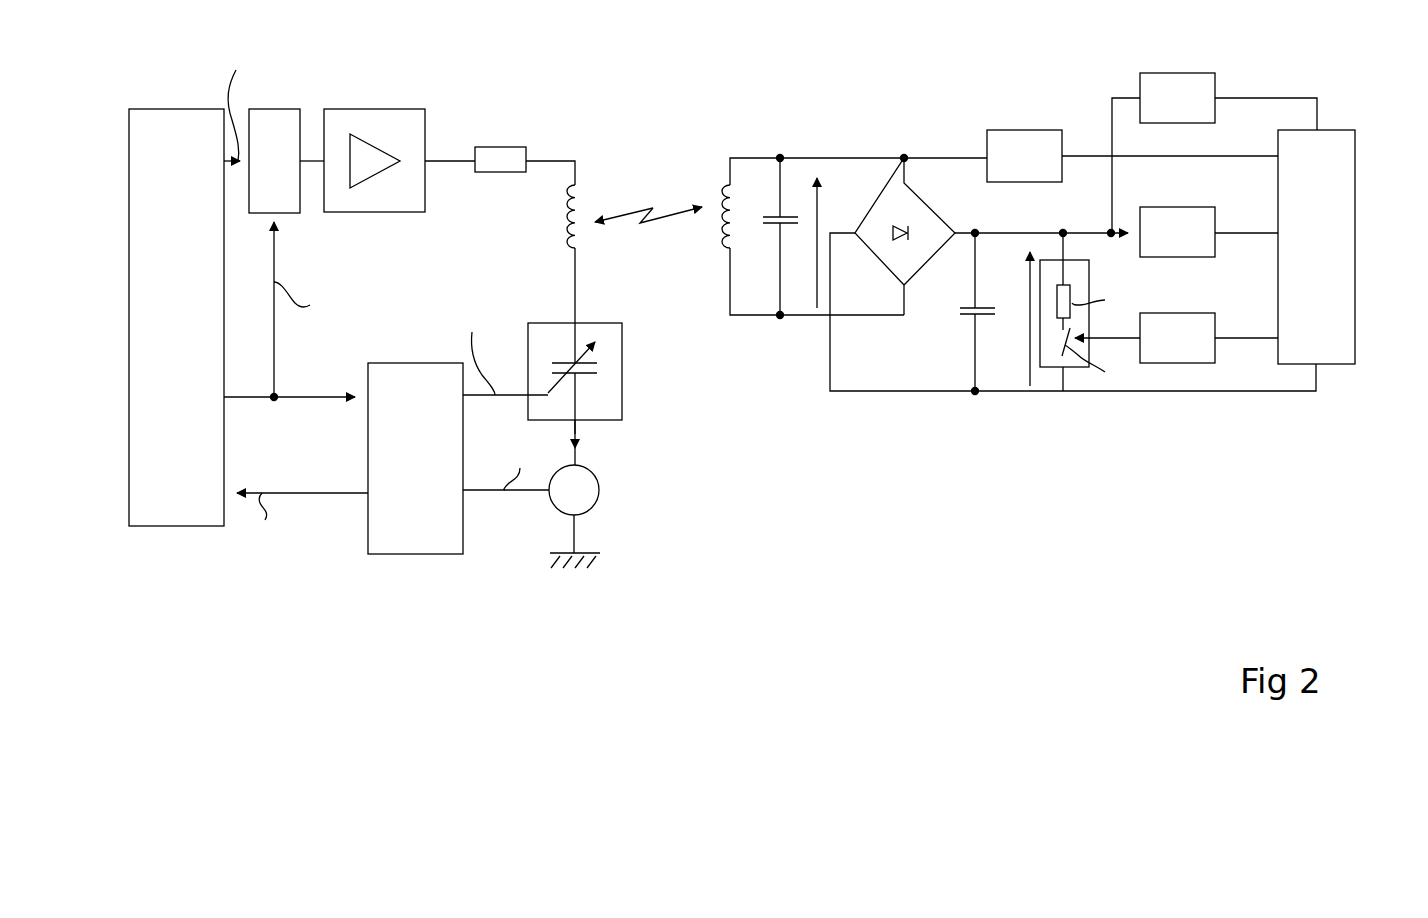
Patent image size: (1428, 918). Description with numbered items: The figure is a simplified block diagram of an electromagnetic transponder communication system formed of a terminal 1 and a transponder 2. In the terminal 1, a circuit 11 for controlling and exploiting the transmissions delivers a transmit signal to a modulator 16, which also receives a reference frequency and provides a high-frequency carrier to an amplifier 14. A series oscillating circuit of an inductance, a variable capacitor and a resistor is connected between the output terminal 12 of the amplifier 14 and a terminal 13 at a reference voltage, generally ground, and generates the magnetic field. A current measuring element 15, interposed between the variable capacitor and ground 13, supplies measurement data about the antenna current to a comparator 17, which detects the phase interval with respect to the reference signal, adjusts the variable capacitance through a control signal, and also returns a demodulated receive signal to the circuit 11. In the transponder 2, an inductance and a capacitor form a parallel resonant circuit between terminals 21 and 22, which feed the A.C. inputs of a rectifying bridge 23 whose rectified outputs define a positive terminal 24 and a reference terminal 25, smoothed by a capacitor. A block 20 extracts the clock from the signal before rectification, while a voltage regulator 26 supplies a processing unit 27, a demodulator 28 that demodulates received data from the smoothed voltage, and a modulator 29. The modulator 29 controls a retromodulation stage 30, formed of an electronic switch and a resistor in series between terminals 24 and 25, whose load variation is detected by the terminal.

The terminal 1 is at (328, 612).
The transponder 2 is at (937, 520).
The circuit for controlling and exploiting the transmissions 11 is at (174, 109).
The output terminal 12 is at (450, 161).
The terminal at a reference voltage 13 is at (575, 540).
The amplifier 14 is at (380, 109).
The current measuring element 15 is at (600, 495).
The modulator 16 is at (275, 109).
The comparator 17 is at (400, 555).
The clock extraction block 20 is at (1015, 130).
The first terminal of the parallel oscillating circuit 21 is at (780, 158).
The second terminal of the parallel oscillating circuit 22 is at (780, 318).
The rectifying bridge 23 is at (930, 213).
The positive terminal 24 is at (980, 233).
The reference terminal 25 is at (975, 395).
The voltage regulator 26 is at (1195, 73).
The processing unit 27 is at (1355, 176).
The demodulator 28 is at (1170, 207).
The modulator 29 is at (1170, 313).
The retromodulation stage 30 is at (1089, 280).